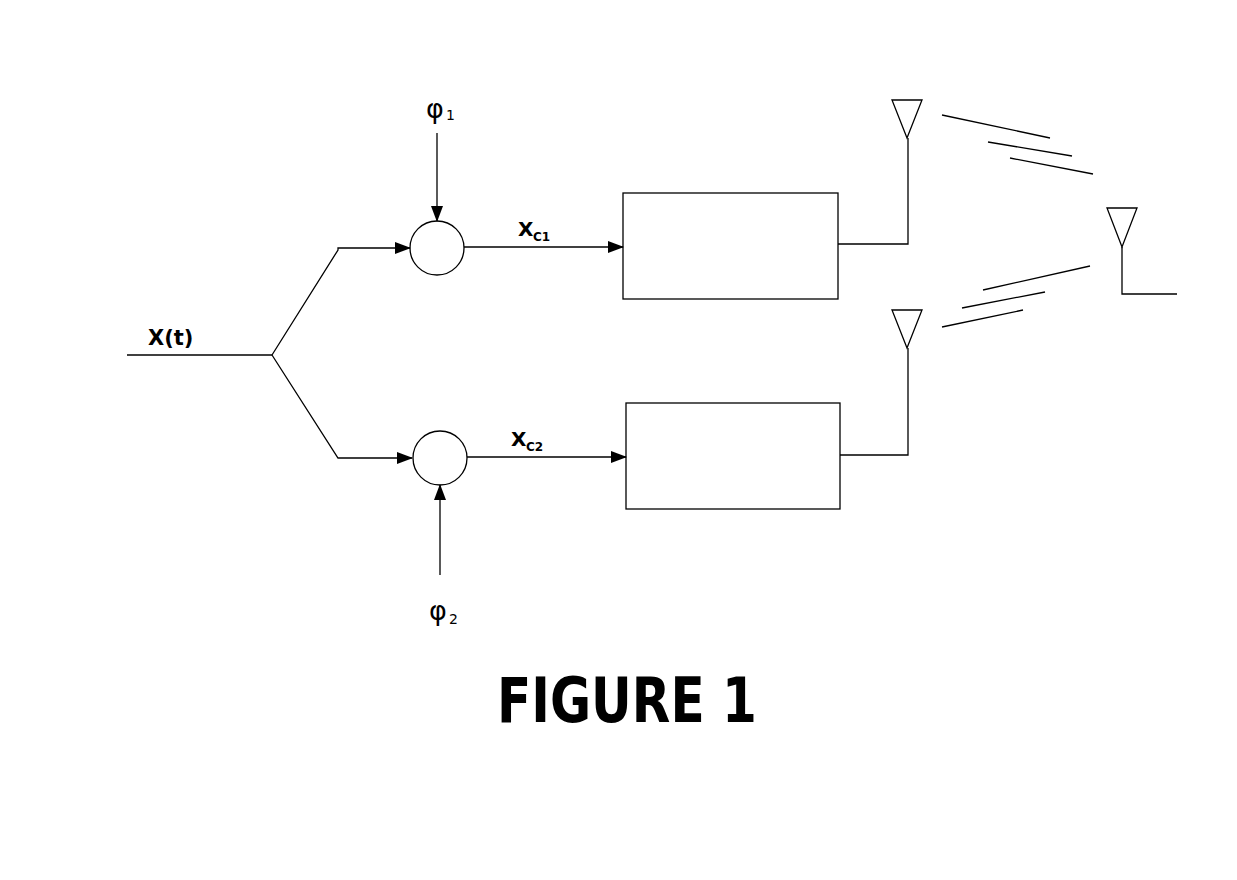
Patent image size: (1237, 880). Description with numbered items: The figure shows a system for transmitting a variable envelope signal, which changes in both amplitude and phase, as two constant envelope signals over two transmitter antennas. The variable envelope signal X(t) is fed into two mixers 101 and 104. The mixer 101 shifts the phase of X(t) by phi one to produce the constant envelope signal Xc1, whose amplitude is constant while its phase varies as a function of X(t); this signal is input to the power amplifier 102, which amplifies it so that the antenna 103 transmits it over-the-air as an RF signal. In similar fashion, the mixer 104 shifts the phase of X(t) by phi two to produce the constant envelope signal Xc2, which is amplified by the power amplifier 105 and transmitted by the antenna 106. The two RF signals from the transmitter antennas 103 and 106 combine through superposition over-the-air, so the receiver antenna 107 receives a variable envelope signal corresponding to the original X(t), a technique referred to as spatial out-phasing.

The mixer 101 is at (416, 222).
The power amplifier 102 is at (730, 246).
The antenna 103 is at (907, 97).
The mixer 104 is at (427, 430).
The power amplifier 105 is at (733, 456).
The antenna 106 is at (907, 307).
The receiver antenna 107 is at (1122, 205).